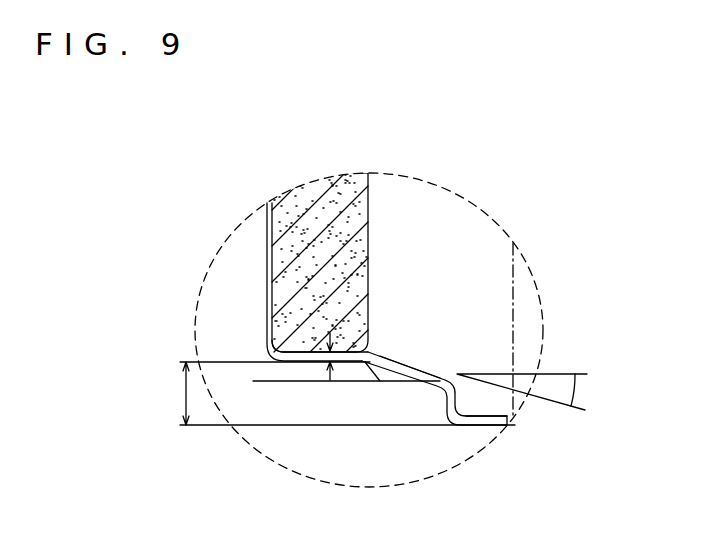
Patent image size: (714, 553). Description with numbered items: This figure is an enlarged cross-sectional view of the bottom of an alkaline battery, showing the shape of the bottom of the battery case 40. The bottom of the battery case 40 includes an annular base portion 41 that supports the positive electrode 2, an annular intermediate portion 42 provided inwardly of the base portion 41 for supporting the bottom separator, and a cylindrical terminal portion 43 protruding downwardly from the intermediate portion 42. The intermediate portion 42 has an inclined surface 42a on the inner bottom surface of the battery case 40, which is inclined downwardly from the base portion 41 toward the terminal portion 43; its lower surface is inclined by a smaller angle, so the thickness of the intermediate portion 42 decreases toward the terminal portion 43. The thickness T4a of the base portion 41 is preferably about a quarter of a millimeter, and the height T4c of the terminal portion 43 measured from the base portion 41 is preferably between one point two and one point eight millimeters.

The positive electrode 2 is at (270, 278).
The battery case 40 is at (268, 242).
The base portion 41 is at (310, 362).
The intermediate portion 42 is at (403, 372).
The inclined surface 42a is at (413, 363).
The terminal portion 43 is at (477, 428).
The thickness of the base portion T4a is at (363, 352).
The height of the terminal portion T4c is at (159, 393).